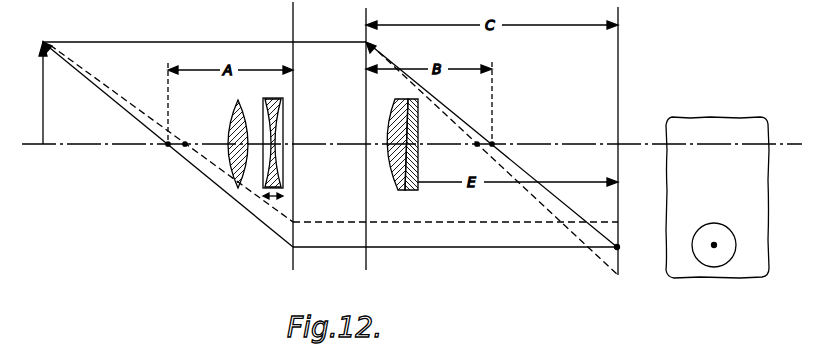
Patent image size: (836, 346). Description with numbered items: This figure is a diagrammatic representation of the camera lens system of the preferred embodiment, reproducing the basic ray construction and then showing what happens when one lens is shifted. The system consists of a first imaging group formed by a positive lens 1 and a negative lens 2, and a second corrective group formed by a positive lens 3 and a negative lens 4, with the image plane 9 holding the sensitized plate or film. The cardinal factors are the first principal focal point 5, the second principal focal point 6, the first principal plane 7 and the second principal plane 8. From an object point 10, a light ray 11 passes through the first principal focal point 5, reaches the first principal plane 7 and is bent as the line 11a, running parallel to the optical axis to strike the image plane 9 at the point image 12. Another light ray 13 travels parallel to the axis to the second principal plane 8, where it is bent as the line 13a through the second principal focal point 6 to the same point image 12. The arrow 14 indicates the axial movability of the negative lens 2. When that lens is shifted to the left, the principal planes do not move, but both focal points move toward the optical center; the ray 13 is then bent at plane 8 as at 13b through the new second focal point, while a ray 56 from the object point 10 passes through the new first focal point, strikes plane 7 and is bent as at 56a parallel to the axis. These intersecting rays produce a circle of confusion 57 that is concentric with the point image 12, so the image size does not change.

The positive lens 1 is at (231, 121).
The negative lens 2 is at (273, 97).
The positive lens 3 is at (392, 176).
The negative lens 4 is at (409, 191).
The first principal focal point 5 is at (203, 113).
The second principal focal point 6 is at (467, 158).
The first principal plane 7 is at (293, 266).
The second principal plane 8 is at (366, 268).
The image plane 9 is at (618, 68).
The object point 10 is at (41, 84).
The light ray 11 is at (114, 101).
The bent light ray 11a is at (458, 247).
The point image 12 is at (612, 250).
The light ray 13 is at (163, 42).
The bent light ray 13a is at (576, 213).
The bent light ray 13b is at (525, 190).
The arrow 14 is at (265, 200).
The light ray 56 is at (98, 81).
The bent light ray 56a is at (444, 222).
The circle of confusion 57 is at (712, 223).